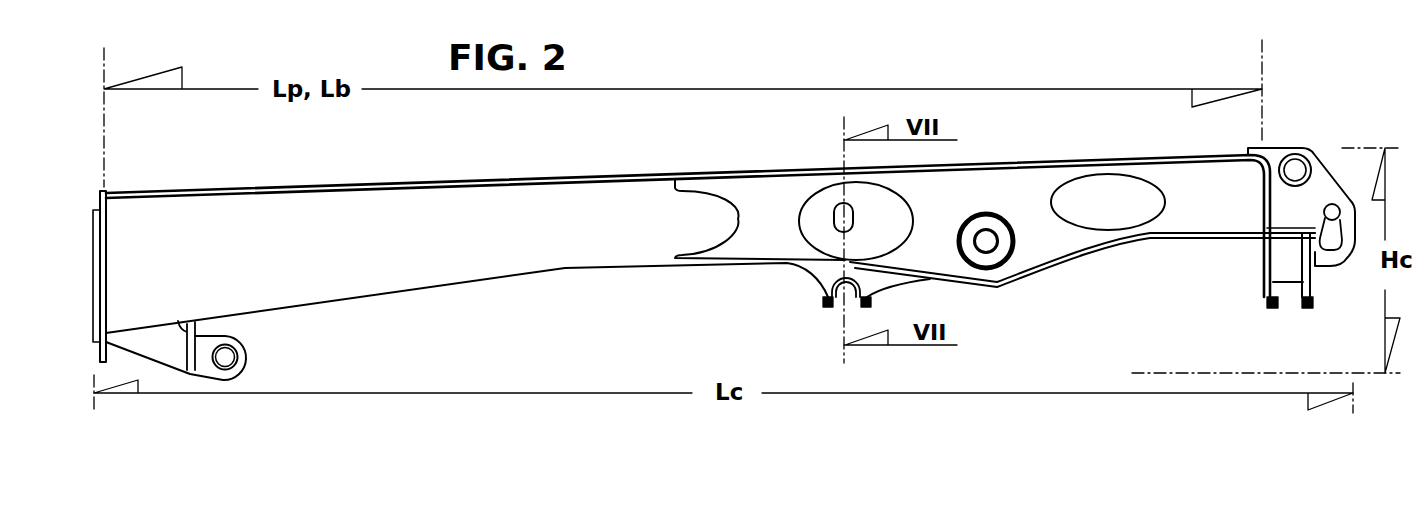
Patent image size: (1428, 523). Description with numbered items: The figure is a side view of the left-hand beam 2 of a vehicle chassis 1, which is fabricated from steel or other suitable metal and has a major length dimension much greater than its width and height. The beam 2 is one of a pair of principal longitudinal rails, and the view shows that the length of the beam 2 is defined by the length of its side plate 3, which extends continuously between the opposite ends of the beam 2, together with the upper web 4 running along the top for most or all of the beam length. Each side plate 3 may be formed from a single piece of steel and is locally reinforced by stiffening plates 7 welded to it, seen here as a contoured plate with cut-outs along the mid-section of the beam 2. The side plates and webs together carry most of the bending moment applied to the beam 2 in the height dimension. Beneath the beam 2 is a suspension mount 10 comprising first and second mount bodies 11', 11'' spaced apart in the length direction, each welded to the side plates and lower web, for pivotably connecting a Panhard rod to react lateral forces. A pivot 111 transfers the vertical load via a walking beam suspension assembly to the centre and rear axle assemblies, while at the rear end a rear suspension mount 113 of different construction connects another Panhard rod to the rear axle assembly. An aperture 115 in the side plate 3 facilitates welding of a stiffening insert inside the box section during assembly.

The chassis 1 is at (634, 142).
The beam 2 is at (537, 187).
The side plate 3 is at (612, 255).
The upper web 4 is at (434, 184).
The stiffening plate 7 is at (761, 201).
The suspension mount 10 is at (809, 308).
The first mount body 11' is at (813, 325).
The second mount body 11'' is at (900, 302).
The pivot 111 is at (999, 248).
The rear suspension mount 113 is at (1260, 327).
The aperture 115 is at (853, 218).